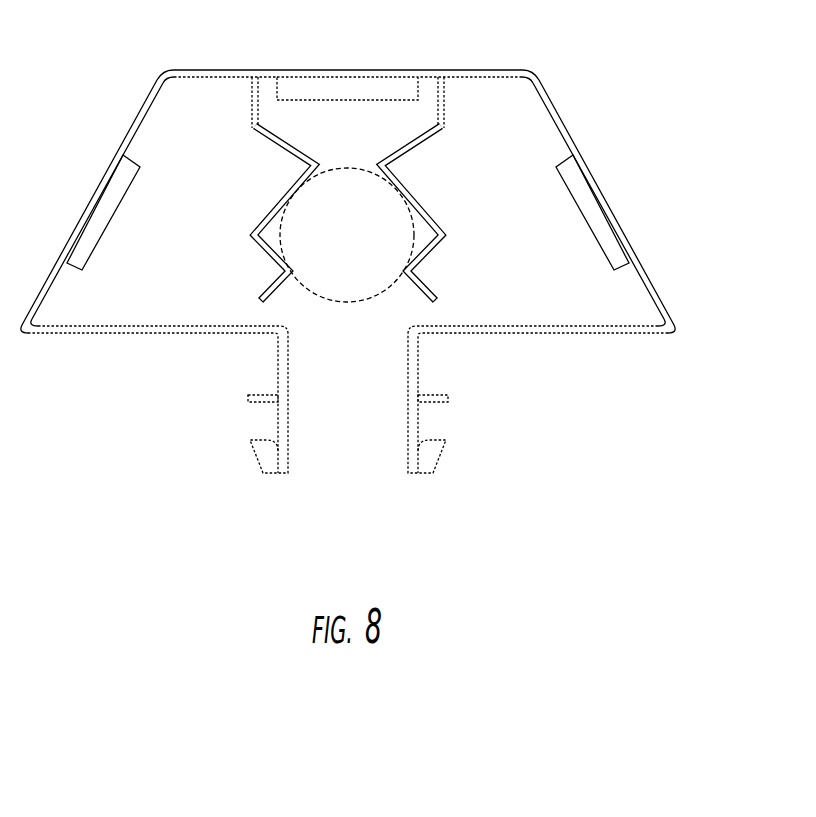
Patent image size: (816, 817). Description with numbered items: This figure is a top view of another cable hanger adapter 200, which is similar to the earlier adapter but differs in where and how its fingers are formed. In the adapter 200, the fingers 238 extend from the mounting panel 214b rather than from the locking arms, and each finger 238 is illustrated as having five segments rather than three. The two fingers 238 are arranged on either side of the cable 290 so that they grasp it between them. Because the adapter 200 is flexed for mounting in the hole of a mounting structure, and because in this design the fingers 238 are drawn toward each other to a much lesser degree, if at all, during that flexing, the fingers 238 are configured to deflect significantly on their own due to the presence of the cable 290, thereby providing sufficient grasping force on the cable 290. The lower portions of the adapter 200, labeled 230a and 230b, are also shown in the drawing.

The cable hanger adapter 200 is at (682, 293).
The mounting panel 214b is at (202, 70).
The fingers 238 is at (392, 158).
The cable 290 is at (348, 302).
The first lower flange 230a is at (182, 334).
The second lower flange 230b is at (530, 334).